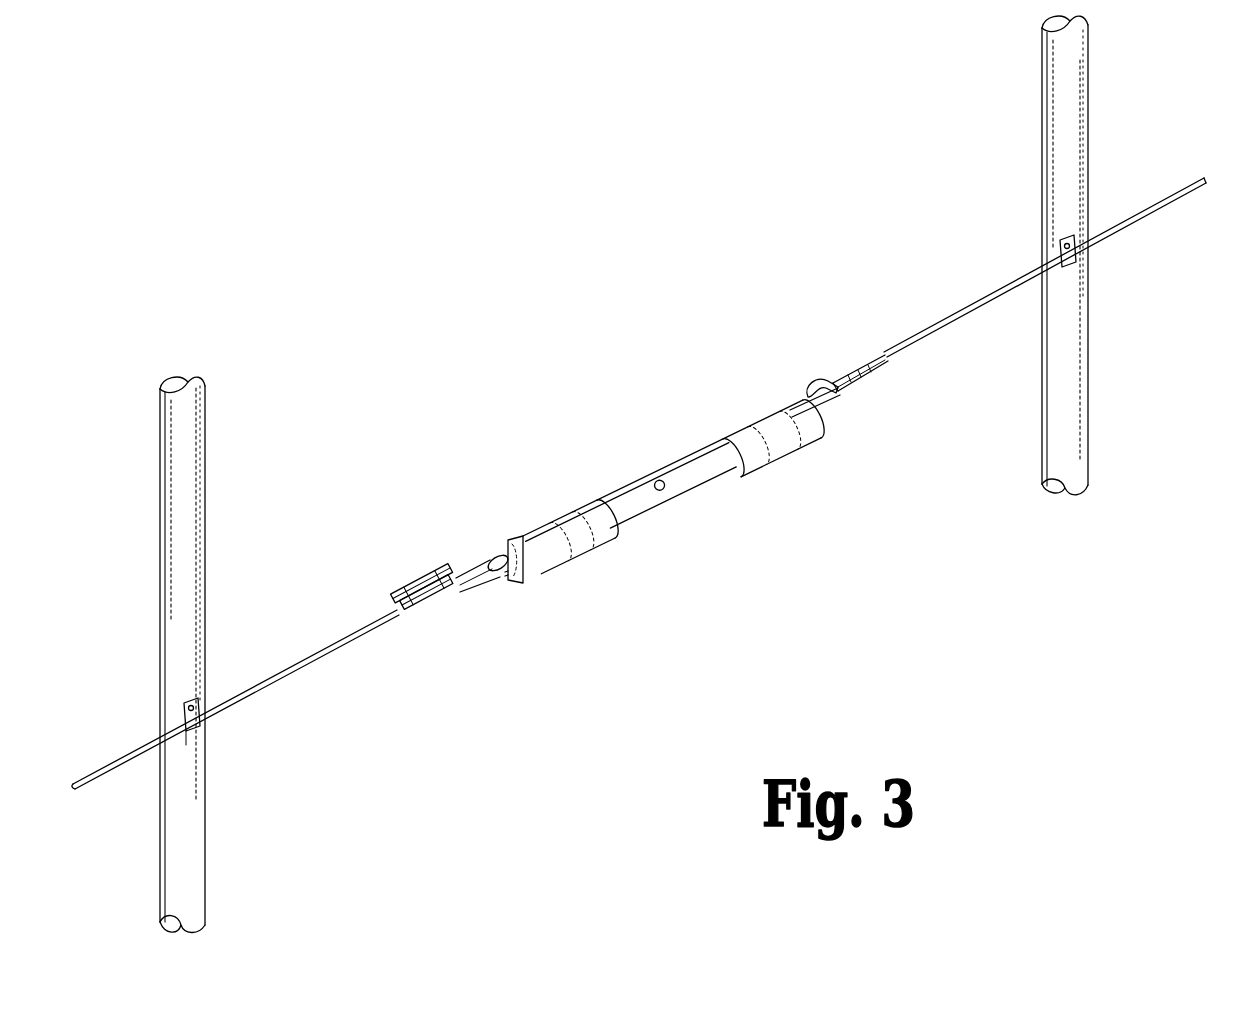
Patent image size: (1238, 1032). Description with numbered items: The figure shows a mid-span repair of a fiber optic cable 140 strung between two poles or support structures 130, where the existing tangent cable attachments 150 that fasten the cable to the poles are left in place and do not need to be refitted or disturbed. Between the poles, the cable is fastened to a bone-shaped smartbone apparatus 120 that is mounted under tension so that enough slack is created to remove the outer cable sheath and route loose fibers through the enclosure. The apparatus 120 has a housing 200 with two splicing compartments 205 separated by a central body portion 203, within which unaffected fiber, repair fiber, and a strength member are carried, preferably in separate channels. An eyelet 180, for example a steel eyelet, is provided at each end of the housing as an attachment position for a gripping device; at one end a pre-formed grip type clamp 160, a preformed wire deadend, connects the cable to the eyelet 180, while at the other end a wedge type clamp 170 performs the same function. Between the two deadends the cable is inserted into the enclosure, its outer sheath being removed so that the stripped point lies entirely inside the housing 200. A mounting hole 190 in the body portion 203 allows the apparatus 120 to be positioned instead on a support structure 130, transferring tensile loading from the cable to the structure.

The smartbone apparatus 120 is at (630, 453).
The support structure 130 is at (204, 448).
The cable 140 is at (1160, 204).
The tangent cable attachment 150 is at (200, 720).
The pre-formed grip type clamp 160 is at (860, 376).
The wedge type clamp 170 is at (415, 588).
The eyelet 180 is at (818, 392).
The mounting hole 190 is at (666, 487).
The housing 200 is at (701, 535).
The body portion 203 is at (688, 446).
The splicing compartment 205 is at (545, 565).